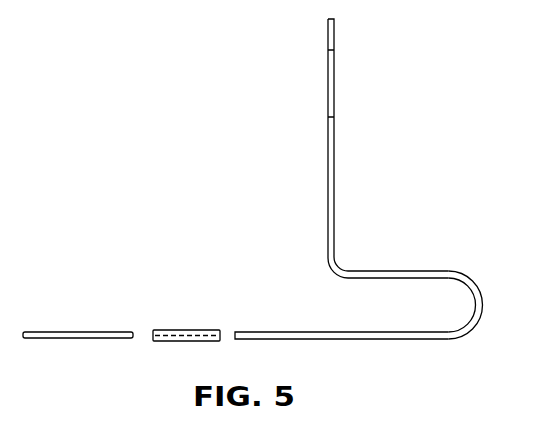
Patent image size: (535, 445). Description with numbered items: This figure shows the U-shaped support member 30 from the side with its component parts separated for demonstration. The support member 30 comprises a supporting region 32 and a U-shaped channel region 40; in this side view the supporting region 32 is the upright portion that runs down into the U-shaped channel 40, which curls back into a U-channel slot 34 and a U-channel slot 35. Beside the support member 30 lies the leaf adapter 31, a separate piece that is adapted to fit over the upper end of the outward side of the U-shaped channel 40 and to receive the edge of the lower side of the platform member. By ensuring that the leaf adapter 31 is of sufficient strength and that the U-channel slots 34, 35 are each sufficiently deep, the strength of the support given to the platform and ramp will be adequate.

The support member 30 is at (359, 204).
The leaf adapter 31 is at (188, 330).
The supporting region 32 is at (334, 30).
The U-channel slot 34 is at (399, 270).
The U-shaped channel 40 is at (436, 296).
The U-channel slot 35 is at (392, 345).